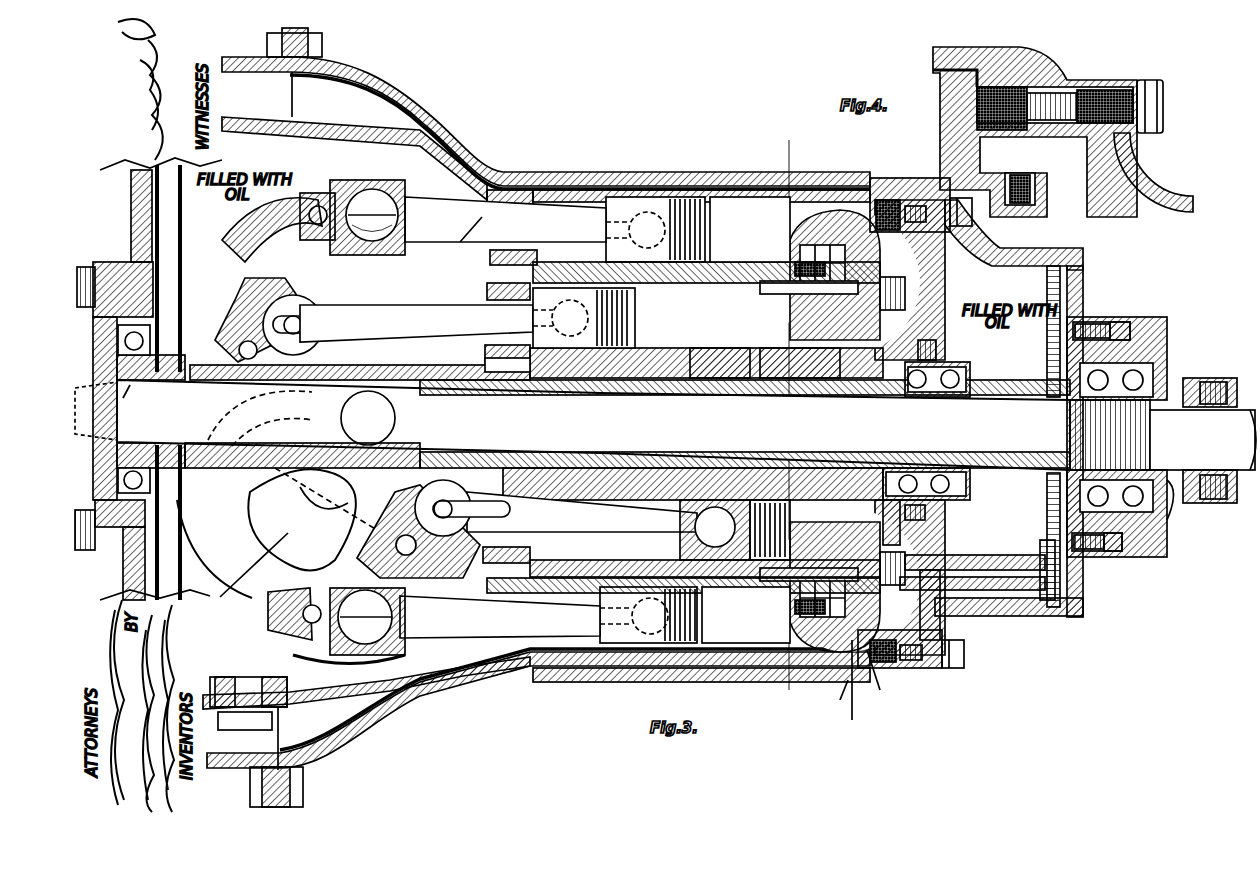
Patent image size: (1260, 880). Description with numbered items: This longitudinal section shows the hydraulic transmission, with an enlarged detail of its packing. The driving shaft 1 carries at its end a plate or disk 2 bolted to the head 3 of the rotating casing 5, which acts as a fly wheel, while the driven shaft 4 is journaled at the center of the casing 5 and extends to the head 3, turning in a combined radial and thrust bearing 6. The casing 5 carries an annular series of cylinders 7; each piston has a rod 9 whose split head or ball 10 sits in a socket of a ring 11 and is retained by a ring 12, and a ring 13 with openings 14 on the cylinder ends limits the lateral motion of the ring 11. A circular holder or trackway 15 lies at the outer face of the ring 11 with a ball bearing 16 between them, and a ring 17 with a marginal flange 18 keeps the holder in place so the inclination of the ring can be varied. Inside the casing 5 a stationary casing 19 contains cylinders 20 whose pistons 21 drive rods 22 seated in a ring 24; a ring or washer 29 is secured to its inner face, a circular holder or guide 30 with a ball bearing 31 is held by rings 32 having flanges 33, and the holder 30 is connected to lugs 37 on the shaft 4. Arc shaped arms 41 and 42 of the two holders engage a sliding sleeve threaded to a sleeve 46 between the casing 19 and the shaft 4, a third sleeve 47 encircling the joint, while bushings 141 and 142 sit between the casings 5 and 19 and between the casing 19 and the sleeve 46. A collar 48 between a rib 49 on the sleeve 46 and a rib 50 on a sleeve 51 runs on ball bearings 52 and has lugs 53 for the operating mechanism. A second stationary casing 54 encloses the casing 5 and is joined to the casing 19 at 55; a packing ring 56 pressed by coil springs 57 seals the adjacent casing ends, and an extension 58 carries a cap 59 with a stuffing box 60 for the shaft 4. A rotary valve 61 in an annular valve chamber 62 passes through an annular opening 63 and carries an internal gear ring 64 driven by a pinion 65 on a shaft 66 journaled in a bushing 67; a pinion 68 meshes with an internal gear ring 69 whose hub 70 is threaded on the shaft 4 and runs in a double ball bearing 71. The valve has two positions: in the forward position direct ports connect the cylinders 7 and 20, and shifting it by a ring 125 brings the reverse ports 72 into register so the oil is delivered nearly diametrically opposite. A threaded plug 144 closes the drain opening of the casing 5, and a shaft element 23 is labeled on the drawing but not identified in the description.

In FIG. 3, the driving shaft 1 is at (125, 394).
In FIG. 3, the plate or disk 2 is at (98, 330).
In FIG. 3, the head 3 is at (131, 220).
In FIG. 3, the driven shaft 4 is at (1163, 435).
In FIG. 3, the casing 5 is at (355, 125).
In FIG. 3, the combined radial and thrust bearing 6 is at (663, 170).
In FIG. 3, the cylinders 7 is at (722, 208).
In FIG. 3, the rod 9 is at (500, 443).
In FIG. 3, the split head or ball 10 is at (388, 205).
In FIG. 3, the ring 11 is at (332, 250).
In FIG. 3, the ring 12 is at (410, 243).
In FIG. 3, the ring 13 is at (470, 180).
In FIG. 3, the openings 14 is at (482, 265).
In FIG. 3, the circular holder or trackway 15 is at (243, 232).
In FIG. 3, the ball bearing 16 is at (268, 625).
In FIG. 3, the ring 17 is at (325, 182).
In FIG. 3, the marginal flange 18 is at (802, 140).
In FIG. 3, the stationary casing 19 is at (742, 352).
In FIG. 3, the cylinders 20 is at (640, 352).
In FIG. 3, the piston 21 is at (625, 322).
In FIG. 3, the rod 22 is at (452, 332).
In FIG. 3, the shaft 23 is at (478, 395).
In FIG. 3, the ring 24 is at (240, 292).
In FIG. 3, the ring or washer 29 is at (482, 560).
In FIG. 3, the circular holder or guide 30 is at (360, 573).
In FIG. 3, the ball bearing 31 is at (378, 534).
In FIG. 3, the rings 32 is at (235, 320).
In FIG. 3, the marginal flanges 33 is at (351, 626).
In FIG. 3, the lugs 37 is at (368, 418).
In FIG. 3, the arc shaped arms 41 is at (235, 588).
In FIG. 3, the arc shaped arms 42 is at (215, 555).
In FIG. 3, the sleeve 46 is at (695, 352).
In FIG. 3, the third sleeve 47 is at (360, 364).
In FIG. 3, the collar 48 is at (940, 505).
In FIG. 3, the radial rib 49 is at (970, 378).
In FIG. 3, the rib 50 is at (907, 513).
In FIG. 3, the sleeve 51 is at (895, 470).
In FIG. 3, the ball bearings 52 is at (945, 470).
In FIG. 3, the lugs 53 is at (940, 350).
In FIG. 3, the stationary casing 54 is at (880, 180).
In FIG. 3, the end connection 55 is at (920, 335).
In FIG. 4, the packing ring 56 is at (1005, 90).
In FIG. 4, the coil springs 57 is at (1068, 82).
In FIG. 3, the extension 58 is at (1085, 268).
In FIG. 3, the cap 59 is at (1168, 360).
In FIG. 3, the stuffing box 60 is at (1195, 508).
In FIG. 3, the rotary valve 61 is at (833, 702).
In FIG. 4, the rotary valve 61 is at (1045, 178).
In FIG. 3, the annular valve chamber 62 is at (775, 628).
In FIG. 3, the annular opening 63 is at (878, 680).
In FIG. 3, the internal gear ring 64 is at (945, 270).
In FIG. 3, the pinion 65 is at (957, 606).
In FIG. 3, the shaft 66 is at (1000, 616).
In FIG. 3, the bushing 67 is at (998, 562).
In FIG. 3, the pinion 68 is at (1083, 578).
In FIG. 3, the internal gear ring 69 is at (1052, 275).
In FIG. 3, the hub 70 is at (1155, 525).
In FIG. 3, the double ball bearing 71 is at (800, 300).
In FIG. 3, the ports 72 is at (795, 262).
In FIG. 4, the ring 125 is at (1017, 178).
In FIG. 3, the bushing 141 is at (525, 262).
In FIG. 3, the bushing 142 is at (598, 385).
In FIG. 3, the threaded plug 144 is at (258, 737).